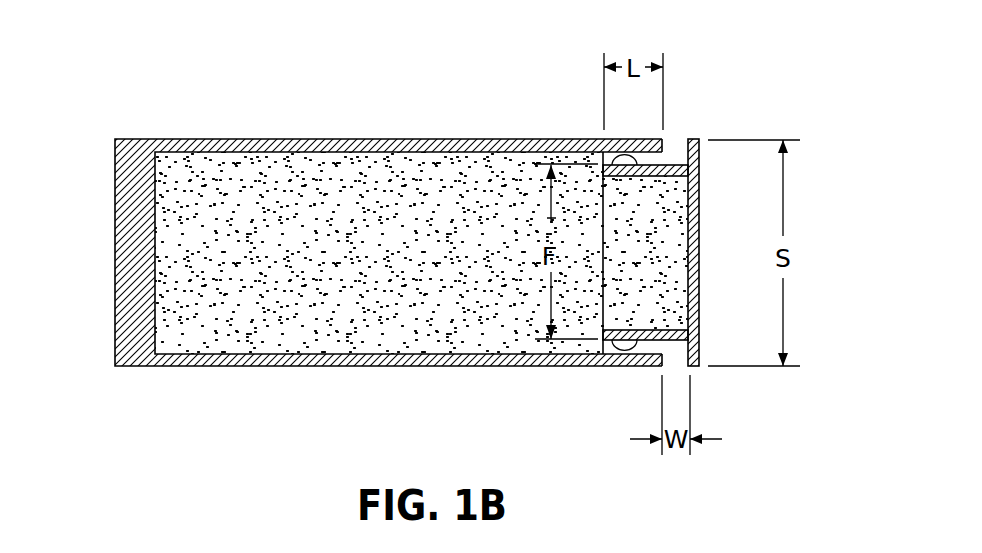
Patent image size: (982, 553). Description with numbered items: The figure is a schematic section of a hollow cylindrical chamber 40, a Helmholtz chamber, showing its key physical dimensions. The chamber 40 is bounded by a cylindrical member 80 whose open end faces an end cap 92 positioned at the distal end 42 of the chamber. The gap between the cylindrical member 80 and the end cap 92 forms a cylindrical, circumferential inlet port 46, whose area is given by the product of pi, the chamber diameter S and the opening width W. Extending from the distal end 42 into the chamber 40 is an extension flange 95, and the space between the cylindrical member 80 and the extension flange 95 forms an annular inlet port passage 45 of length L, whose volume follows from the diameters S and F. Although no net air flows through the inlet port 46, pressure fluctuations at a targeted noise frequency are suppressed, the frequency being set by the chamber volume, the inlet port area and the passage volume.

The hollow cylindrical chamber 40 is at (405, 122).
The cylindrical member 80 is at (506, 139).
The annular inlet port passage 45 is at (603, 140).
The inlet port 46 is at (680, 146).
The end cap 92 is at (700, 192).
The distal end 42 is at (700, 312).
The extension flange 95 is at (634, 167).